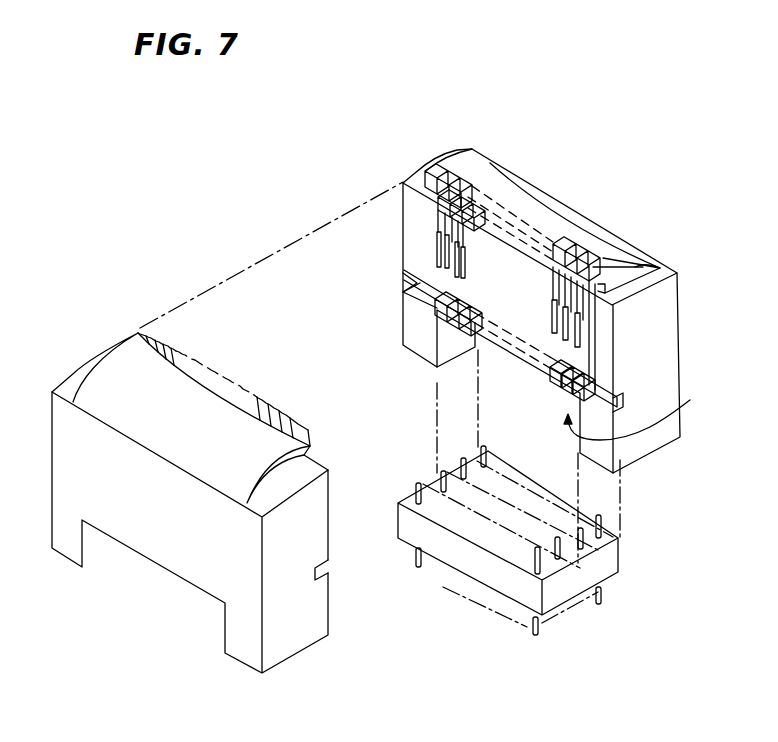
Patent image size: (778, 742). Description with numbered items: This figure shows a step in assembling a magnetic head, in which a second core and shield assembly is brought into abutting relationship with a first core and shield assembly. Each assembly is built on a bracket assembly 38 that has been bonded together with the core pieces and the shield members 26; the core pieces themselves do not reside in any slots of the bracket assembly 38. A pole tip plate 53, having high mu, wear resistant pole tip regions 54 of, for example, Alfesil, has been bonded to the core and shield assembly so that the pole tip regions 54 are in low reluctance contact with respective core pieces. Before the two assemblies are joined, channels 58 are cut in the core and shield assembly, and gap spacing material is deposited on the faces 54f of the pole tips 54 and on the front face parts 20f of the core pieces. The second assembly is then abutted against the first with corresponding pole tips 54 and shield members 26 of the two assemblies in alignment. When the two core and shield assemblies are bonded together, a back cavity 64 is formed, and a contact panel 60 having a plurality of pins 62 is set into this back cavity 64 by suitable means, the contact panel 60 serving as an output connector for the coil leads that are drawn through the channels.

The bracket assembly 38 is at (403, 228).
The pole tip regions 54 is at (563, 243).
The shield members 26 is at (580, 243).
The pole tip plate 53 is at (635, 267).
The faces of the pole tips 54f is at (552, 255).
The front face parts of the core pieces 20f is at (550, 267).
The channels 58 is at (311, 452).
The back cavity 64 is at (638, 420).
The pins 62 is at (417, 483).
The contact panel 60 is at (473, 562).